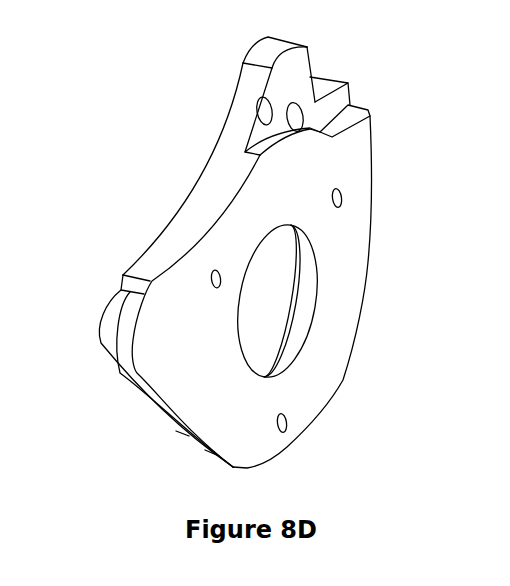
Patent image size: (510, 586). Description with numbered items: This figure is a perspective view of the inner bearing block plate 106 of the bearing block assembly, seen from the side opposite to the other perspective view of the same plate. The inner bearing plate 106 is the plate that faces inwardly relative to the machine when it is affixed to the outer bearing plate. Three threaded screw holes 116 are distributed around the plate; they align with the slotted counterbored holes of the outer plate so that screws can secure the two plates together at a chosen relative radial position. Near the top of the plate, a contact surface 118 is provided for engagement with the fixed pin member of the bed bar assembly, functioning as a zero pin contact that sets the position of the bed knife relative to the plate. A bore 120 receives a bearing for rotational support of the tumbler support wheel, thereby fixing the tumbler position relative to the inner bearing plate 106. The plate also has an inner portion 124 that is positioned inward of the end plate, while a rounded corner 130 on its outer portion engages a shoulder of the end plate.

The inner bearing block plate 106 is at (347, 266).
The screw holes 116 is at (213, 279).
The contact surface 118 is at (326, 84).
The bore 120 is at (295, 115).
The inner portion 124 is at (343, 122).
The rounded corner 130 is at (110, 300).